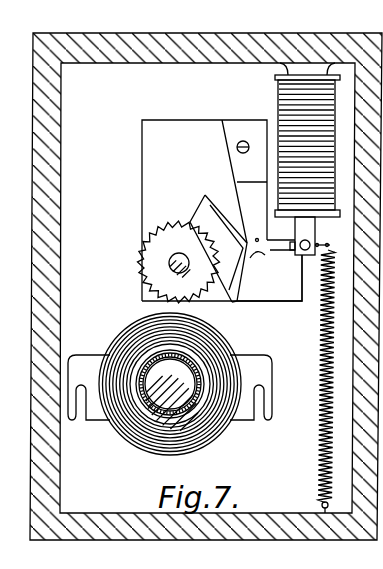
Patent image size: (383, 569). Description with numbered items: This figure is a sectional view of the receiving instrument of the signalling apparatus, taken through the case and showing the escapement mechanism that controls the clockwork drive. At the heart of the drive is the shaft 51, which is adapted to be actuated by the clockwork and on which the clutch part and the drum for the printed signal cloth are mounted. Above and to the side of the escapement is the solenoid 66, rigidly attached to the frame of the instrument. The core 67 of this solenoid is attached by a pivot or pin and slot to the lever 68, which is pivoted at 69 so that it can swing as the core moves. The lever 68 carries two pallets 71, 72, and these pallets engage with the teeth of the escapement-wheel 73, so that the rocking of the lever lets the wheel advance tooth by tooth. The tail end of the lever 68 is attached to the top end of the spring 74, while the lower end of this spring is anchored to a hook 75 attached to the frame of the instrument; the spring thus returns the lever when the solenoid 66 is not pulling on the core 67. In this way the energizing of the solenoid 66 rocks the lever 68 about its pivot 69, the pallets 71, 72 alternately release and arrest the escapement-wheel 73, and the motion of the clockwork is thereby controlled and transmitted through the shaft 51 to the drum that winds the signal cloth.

The shaft 51 is at (169, 260).
The solenoid 66 is at (290, 88).
The core 67 is at (310, 231).
The lever 68 is at (257, 242).
The pivot 69 is at (269, 278).
The pallet 71 is at (234, 302).
The pallet 72 is at (205, 196).
The escapement-wheel 73 is at (155, 267).
The spring 74 is at (322, 404).
The hook 75 is at (322, 508).